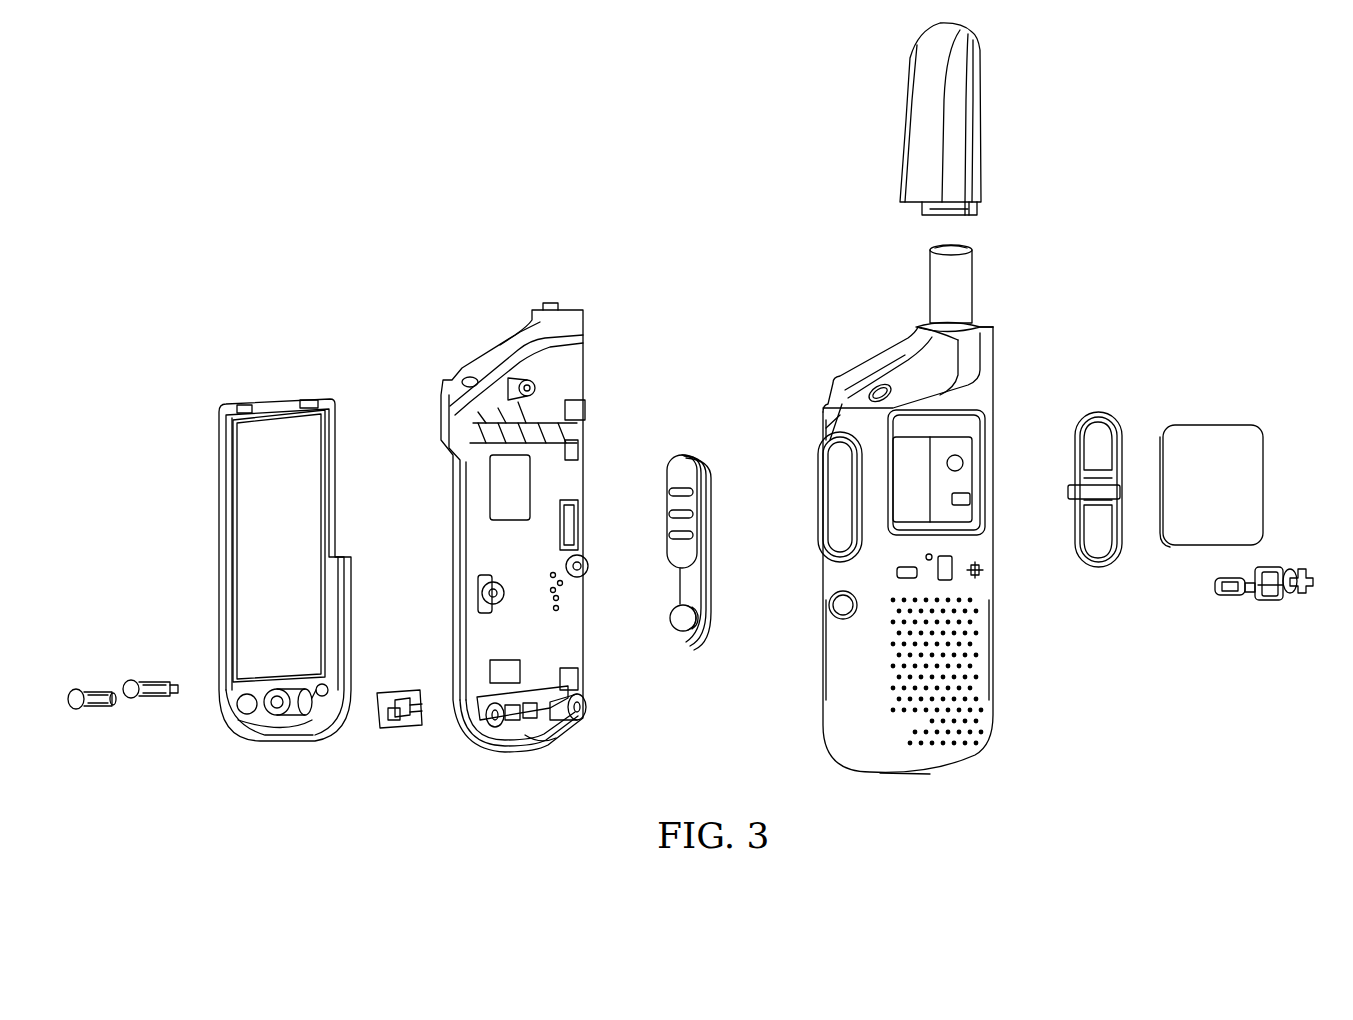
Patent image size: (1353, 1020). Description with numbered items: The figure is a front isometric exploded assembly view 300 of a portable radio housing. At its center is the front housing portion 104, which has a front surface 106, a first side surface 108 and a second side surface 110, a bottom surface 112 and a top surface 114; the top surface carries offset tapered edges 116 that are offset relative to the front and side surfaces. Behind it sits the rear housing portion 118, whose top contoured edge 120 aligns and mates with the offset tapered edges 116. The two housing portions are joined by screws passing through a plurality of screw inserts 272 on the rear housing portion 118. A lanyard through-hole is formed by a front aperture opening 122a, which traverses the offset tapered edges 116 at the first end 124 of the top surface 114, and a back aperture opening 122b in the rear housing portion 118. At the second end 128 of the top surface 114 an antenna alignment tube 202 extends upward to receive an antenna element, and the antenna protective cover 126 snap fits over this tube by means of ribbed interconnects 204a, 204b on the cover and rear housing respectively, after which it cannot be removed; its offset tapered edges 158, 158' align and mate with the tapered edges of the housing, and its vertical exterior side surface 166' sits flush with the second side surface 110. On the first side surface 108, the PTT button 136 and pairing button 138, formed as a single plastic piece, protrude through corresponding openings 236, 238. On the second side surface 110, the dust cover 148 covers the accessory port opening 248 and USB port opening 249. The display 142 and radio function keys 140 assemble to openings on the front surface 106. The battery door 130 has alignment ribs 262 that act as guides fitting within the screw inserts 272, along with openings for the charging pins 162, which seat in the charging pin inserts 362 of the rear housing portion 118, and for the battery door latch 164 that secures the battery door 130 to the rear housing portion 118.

The front isometric exploded assembly view 300 is at (160, 97).
The front housing portion 104 is at (915, 562).
The front surface 106 is at (940, 590).
The first side surface 108 is at (848, 725).
The second side surface 110 is at (990, 712).
The bottom surface 112 is at (918, 777).
The top surface 114 is at (888, 368).
The offset tapered edges 116 is at (938, 357).
The rear housing portion 118 is at (513, 547).
The top contoured edge 120 is at (473, 357).
The front aperture opening 122a is at (860, 400).
The back aperture opening 122b is at (462, 380).
The first end 124 is at (842, 391).
The antenna protective cover 126 is at (949, 119).
The second end 128 is at (985, 323).
The battery door 130 is at (251, 600).
The PTT button 136 is at (668, 500).
The pairing button 138 is at (684, 630).
The radio function keys 140 is at (1272, 602).
The display 142 is at (1264, 475).
The dust cover 148 is at (1110, 416).
The offset tapered edge of antenna protective cover 158 is at (1000, 116).
The offset tapered edge of antenna protective cover 158' is at (870, 123).
The charging pins 162 is at (98, 690).
The battery door latch 164 is at (402, 730).
The chassis tab 166' is at (509, 316).
The antenna alignment tube 202 is at (975, 282).
The ribbed interconnect 204a is at (978, 217).
The ribbed interconnect 204b is at (548, 303).
The opening for PTT button 236 is at (840, 512).
The opening for pairing button 238 is at (832, 605).
The accessory port opening 248 is at (978, 425).
The USB port opening 249 is at (968, 465).
The alignment ribs 262 is at (270, 715).
The screw inserts 272 is at (535, 390).
The charging pin inserts 362 is at (538, 745).